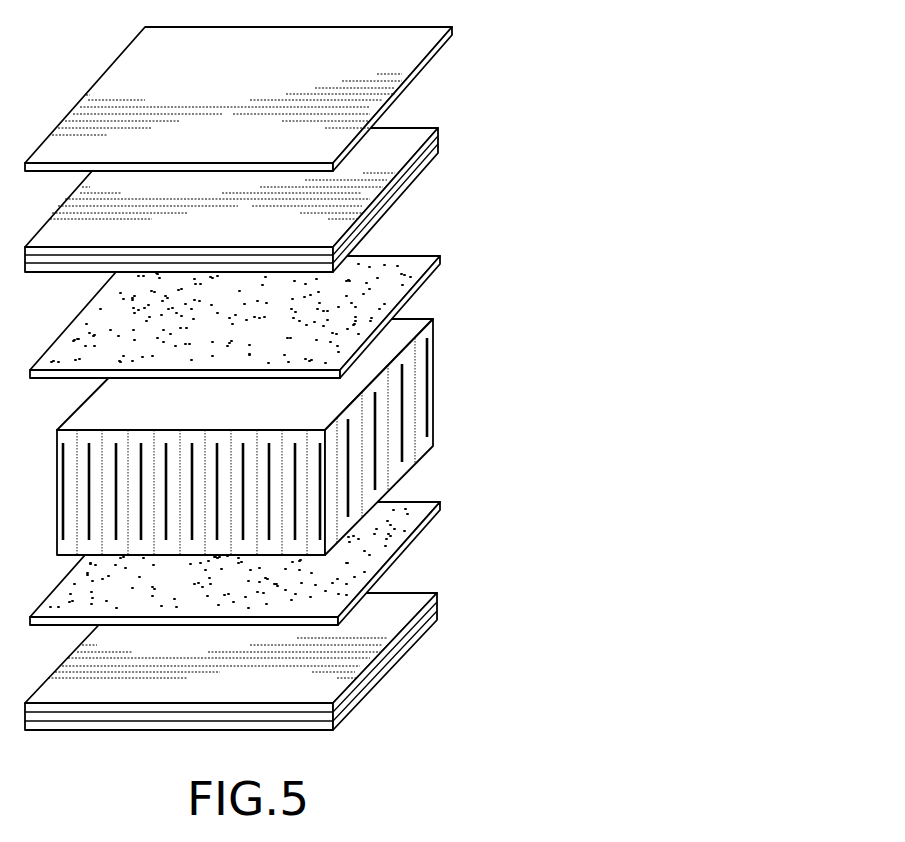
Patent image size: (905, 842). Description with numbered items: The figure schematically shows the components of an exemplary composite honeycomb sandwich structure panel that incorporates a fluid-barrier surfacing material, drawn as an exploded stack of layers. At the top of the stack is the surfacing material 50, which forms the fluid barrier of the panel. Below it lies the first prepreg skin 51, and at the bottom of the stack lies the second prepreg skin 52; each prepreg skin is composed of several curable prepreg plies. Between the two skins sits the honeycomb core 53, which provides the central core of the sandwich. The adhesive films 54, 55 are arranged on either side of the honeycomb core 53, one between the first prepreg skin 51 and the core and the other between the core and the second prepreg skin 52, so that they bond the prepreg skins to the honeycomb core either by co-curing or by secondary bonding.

The surfacing material 50 is at (432, 51).
The first prepreg skin 51 is at (405, 176).
The second prepreg skin 52 is at (410, 628).
The honeycomb core 53 is at (407, 380).
The adhesive film 54 is at (403, 276).
The adhesive film 55 is at (410, 515).